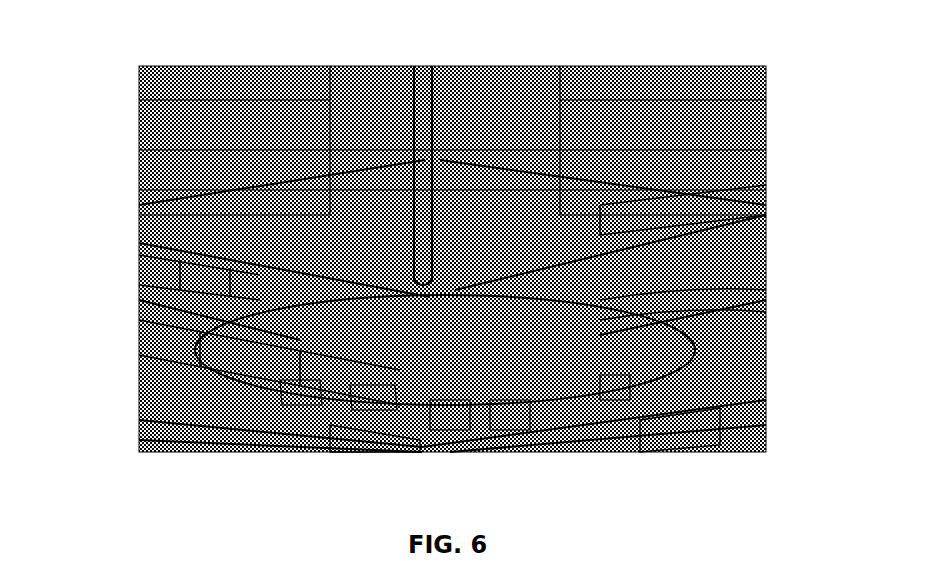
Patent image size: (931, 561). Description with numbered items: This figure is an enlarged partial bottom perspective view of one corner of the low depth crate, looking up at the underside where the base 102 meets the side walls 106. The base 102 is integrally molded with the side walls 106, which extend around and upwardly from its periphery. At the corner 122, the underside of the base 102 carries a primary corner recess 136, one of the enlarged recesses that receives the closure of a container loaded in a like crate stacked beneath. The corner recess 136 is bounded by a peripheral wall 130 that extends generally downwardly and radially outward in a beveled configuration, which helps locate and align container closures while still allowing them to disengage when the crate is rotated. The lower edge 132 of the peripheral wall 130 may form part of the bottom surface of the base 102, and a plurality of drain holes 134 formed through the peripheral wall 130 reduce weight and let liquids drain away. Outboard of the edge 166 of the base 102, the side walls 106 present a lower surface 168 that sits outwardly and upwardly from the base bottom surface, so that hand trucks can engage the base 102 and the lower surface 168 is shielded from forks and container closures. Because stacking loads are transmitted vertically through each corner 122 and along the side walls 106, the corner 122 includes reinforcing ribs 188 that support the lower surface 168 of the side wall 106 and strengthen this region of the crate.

The base 102 is at (170, 338).
The side walls 106 is at (260, 118).
The corner 122 is at (418, 86).
The peripheral wall 130 is at (522, 355).
The lower edge 132 is at (345, 440).
The drain holes 134 is at (665, 425).
The corner recesses 136 is at (150, 426).
The edge 166 is at (730, 290).
The lower surface 168 is at (690, 220).
The reinforcing ribs 188 is at (150, 268).